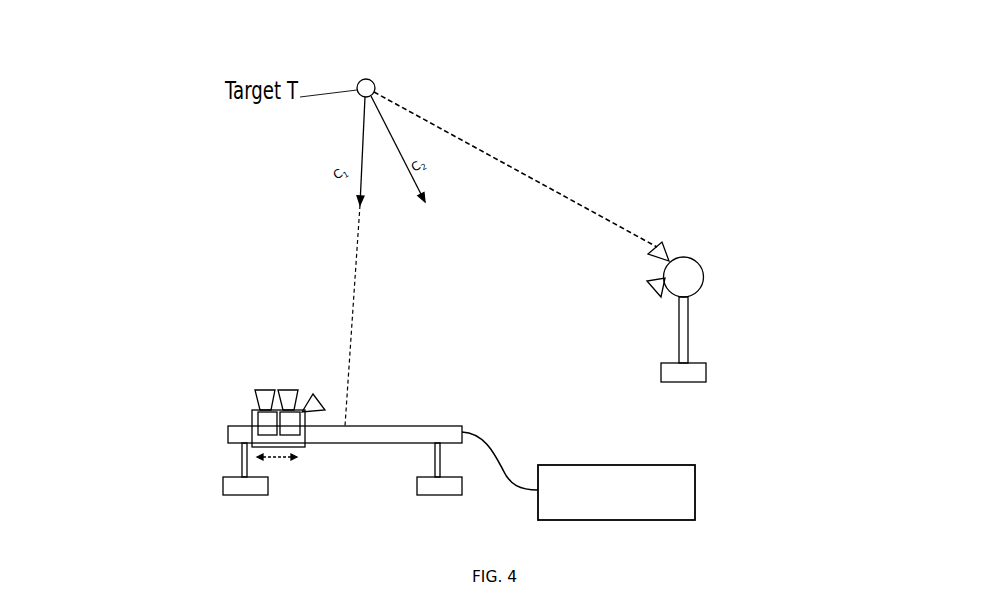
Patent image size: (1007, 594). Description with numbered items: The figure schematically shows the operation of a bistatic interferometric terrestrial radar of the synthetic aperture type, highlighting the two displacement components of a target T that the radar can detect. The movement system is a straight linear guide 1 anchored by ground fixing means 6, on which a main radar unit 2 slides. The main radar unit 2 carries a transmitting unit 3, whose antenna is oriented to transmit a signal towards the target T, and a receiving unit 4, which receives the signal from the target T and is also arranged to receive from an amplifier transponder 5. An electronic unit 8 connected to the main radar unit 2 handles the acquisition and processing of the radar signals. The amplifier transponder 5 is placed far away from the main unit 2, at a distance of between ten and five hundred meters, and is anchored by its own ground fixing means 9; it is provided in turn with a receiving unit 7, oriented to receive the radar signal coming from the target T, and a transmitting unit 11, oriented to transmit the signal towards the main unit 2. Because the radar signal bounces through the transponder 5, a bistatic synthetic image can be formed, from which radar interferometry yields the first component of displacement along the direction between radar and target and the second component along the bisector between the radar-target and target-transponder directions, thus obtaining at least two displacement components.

The linear guide 1 is at (395, 433).
The main radar unit 2 is at (288, 438).
The transmitting unit 3 is at (258, 400).
The receiving unit 4 is at (313, 373).
The amplifier transponder 5 is at (690, 282).
The ground fixing means 6 is at (255, 485).
The receiving unit 7 is at (658, 245).
The electronic unit 8 is at (578, 476).
The ground fixing means 9 is at (688, 330).
The transmitting unit 11 is at (648, 284).